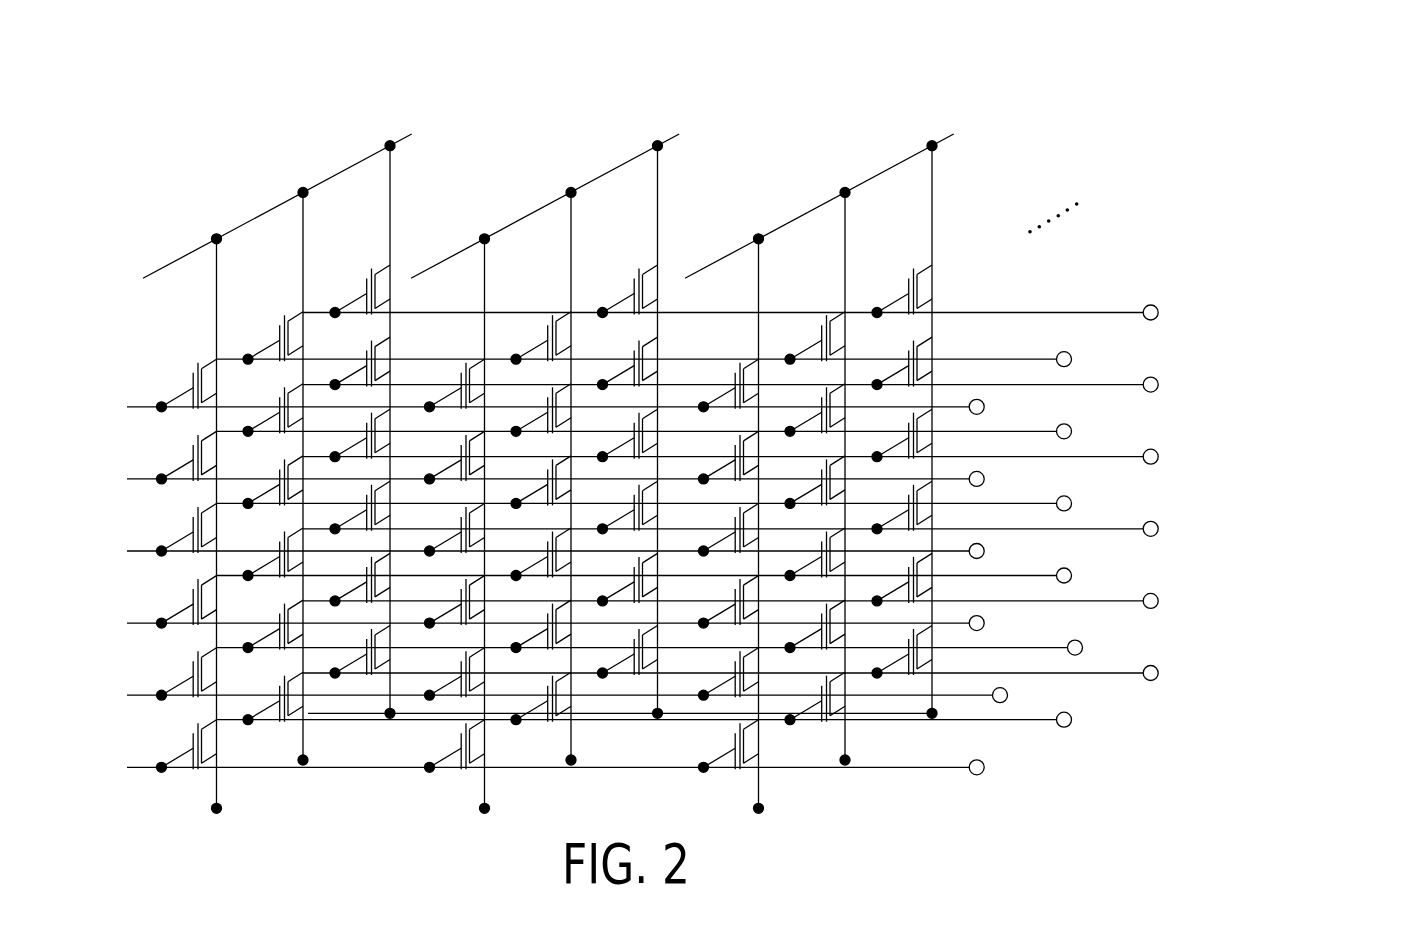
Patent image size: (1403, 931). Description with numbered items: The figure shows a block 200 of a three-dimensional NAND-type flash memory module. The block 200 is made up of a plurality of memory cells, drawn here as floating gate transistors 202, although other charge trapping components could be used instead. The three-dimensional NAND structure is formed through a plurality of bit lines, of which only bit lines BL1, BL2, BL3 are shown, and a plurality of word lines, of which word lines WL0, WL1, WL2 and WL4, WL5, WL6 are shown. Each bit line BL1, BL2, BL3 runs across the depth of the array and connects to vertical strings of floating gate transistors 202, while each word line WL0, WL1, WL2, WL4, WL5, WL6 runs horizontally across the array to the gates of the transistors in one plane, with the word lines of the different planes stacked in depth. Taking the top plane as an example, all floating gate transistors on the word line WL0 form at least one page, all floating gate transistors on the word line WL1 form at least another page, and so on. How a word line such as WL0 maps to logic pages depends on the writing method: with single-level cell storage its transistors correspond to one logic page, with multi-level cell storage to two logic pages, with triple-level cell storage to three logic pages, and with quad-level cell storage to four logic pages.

The block 200 is at (718, 425).
The floating gate transistor 202 is at (139, 383).
The bit line BL1 is at (412, 134).
The bit line BL2 is at (679, 134).
The bit line BL3 is at (954, 134).
The word line WL0 is at (706, 409).
The word line WL1 is at (755, 355).
The word line WL2 is at (810, 307).
The word line WL4 is at (694, 493).
The word line WL5 is at (771, 444).
The word line WL6 is at (839, 382).